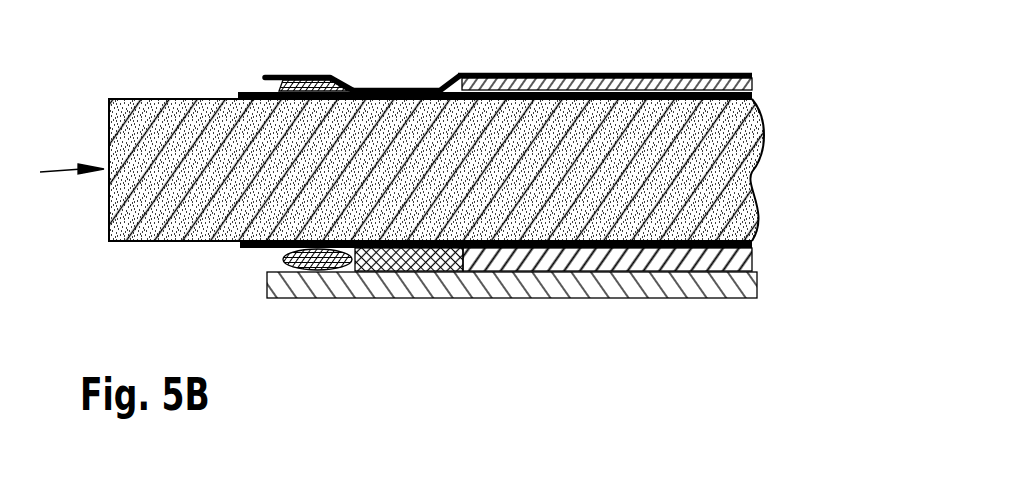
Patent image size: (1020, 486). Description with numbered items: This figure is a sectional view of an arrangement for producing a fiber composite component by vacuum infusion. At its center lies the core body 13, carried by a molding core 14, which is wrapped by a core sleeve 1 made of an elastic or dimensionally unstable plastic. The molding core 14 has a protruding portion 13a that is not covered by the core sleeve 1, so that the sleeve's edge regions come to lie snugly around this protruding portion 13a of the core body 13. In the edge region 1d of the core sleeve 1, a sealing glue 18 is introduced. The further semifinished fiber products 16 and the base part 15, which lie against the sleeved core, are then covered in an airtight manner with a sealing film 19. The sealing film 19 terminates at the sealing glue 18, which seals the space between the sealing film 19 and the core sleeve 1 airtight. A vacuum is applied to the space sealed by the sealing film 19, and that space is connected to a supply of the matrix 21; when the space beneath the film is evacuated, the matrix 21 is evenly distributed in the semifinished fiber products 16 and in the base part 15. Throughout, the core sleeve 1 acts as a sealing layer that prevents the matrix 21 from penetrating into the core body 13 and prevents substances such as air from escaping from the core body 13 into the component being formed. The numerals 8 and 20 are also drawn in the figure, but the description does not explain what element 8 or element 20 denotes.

The core sleeve 1 is at (712, 238).
The edge region of the core sleeve 1d is at (252, 92).
The carrier substrate 8 is at (622, 287).
The core body 13 is at (547, 130).
The protruding portion 13a is at (152, 205).
The molding core 14 is at (56, 172).
The base part 15 is at (530, 262).
The semifinished fiber products 16 is at (668, 87).
The sealing glue 18 is at (313, 76).
The sealing film 19 is at (440, 87).
The connecting layer 20 is at (404, 271).
The matrix 21 is at (668, 87).